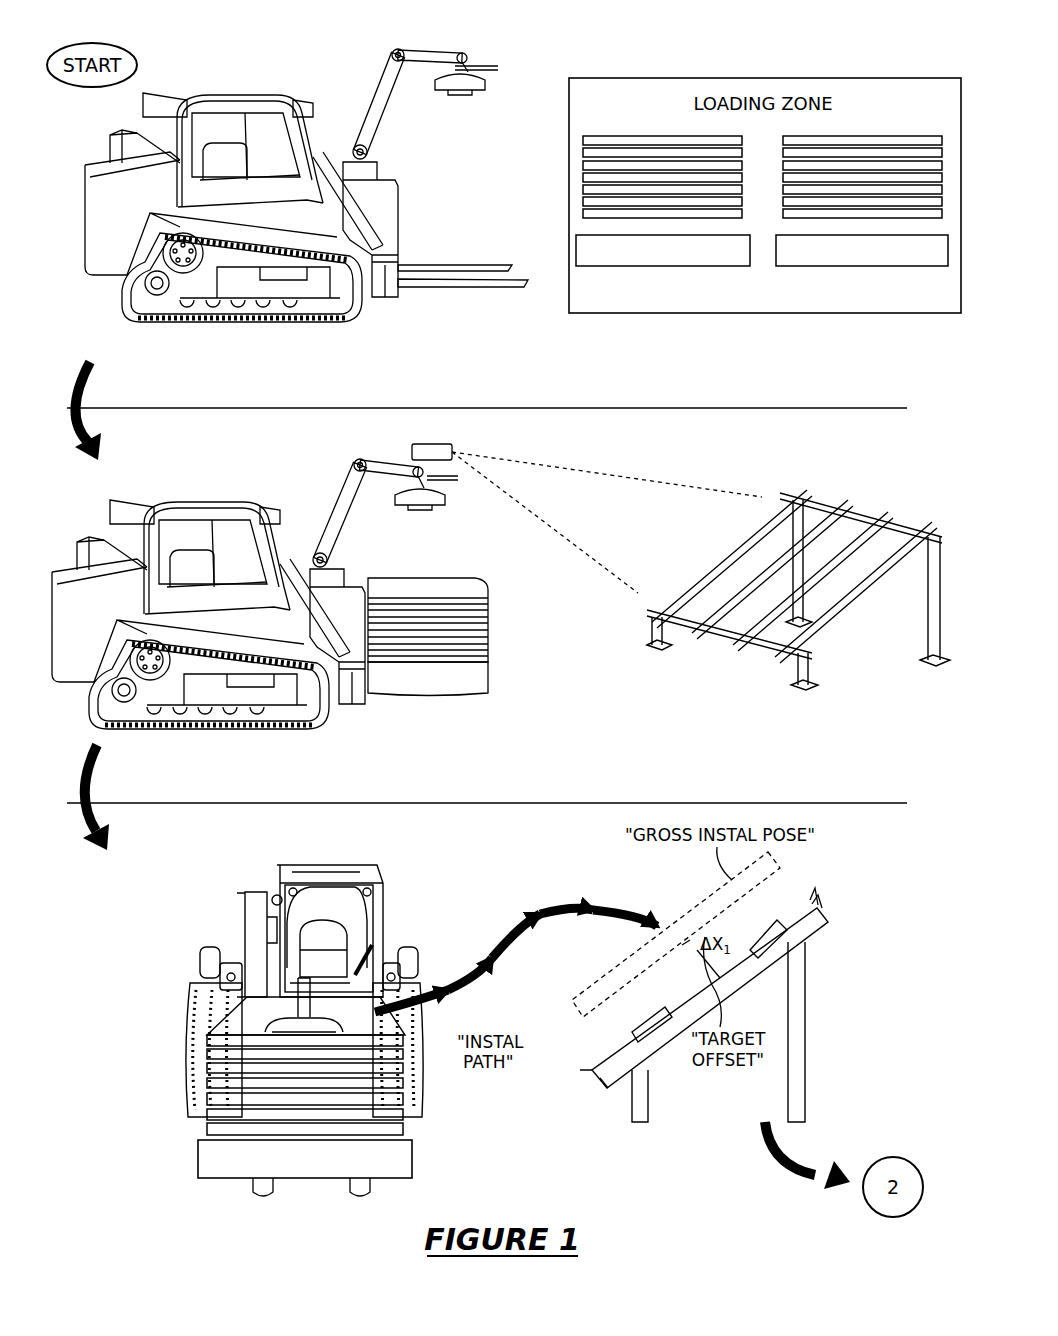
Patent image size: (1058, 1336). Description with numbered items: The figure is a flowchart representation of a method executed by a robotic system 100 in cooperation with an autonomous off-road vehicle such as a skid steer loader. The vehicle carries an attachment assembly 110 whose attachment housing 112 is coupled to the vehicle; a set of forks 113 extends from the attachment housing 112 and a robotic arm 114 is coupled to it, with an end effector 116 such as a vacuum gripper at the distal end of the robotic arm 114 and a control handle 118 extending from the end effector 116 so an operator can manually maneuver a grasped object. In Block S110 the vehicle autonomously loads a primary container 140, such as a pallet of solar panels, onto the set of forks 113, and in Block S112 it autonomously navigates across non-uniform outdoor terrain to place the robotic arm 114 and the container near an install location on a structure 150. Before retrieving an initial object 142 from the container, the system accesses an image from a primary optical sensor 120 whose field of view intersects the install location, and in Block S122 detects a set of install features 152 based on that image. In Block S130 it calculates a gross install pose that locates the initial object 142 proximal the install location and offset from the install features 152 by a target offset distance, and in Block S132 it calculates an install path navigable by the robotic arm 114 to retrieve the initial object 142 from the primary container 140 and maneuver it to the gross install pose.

The robotic system 100 is at (153, 46).
The attachment assembly 110 is at (403, 200).
The attachment housing 112 is at (387, 283).
The set of forks 113 is at (438, 295).
The robotic arm 114 is at (372, 98).
The end effector 116 is at (457, 95).
The control handle 118 is at (493, 66).
The primary optical sensor 120 is at (410, 450).
The primary container 140 is at (652, 242).
The initial object 142 is at (478, 578).
The structure 150 is at (922, 648).
The set of install features 152 is at (810, 903).
The loading block S110 is at (245, 95).
The navigating block S112 is at (173, 425).
The install feature detecting block S122 is at (730, 495).
The gross install pose calculating block S130 is at (587, 988).
The install path calculating block S132 is at (516, 955).